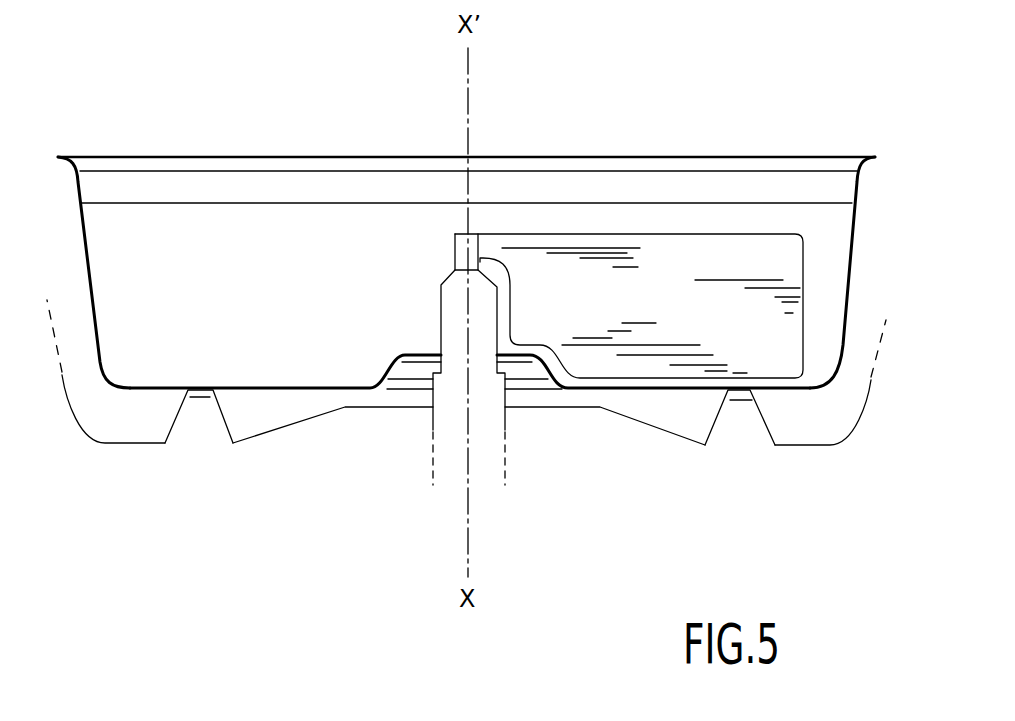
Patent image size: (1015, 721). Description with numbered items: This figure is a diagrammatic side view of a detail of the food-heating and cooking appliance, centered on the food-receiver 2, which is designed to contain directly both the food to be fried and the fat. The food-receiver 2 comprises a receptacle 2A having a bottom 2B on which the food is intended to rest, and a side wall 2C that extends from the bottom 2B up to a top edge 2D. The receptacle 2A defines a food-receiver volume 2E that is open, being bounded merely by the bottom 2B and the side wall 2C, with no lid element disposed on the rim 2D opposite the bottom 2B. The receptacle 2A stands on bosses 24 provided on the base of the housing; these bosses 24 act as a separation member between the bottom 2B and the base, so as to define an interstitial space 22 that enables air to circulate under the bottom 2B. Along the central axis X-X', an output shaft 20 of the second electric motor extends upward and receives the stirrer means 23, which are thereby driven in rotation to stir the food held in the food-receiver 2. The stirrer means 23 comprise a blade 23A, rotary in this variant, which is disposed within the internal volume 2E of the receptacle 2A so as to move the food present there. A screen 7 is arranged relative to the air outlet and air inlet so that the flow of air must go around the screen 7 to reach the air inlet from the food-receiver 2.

The food-receiver 2 is at (504, 233).
The receptacle 2A is at (565, 157).
The bottom 2B is at (292, 390).
The side wall 2C is at (83, 268).
The top edge 2D is at (121, 157).
The food-receiver volume 2E is at (288, 313).
The screen 7 is at (516, 294).
The output shaft 20 is at (453, 302).
The interstitial space 22 is at (264, 423).
The stirrer means 23 is at (704, 228).
The blade 23A is at (770, 331).
The bosses 24 is at (202, 422).